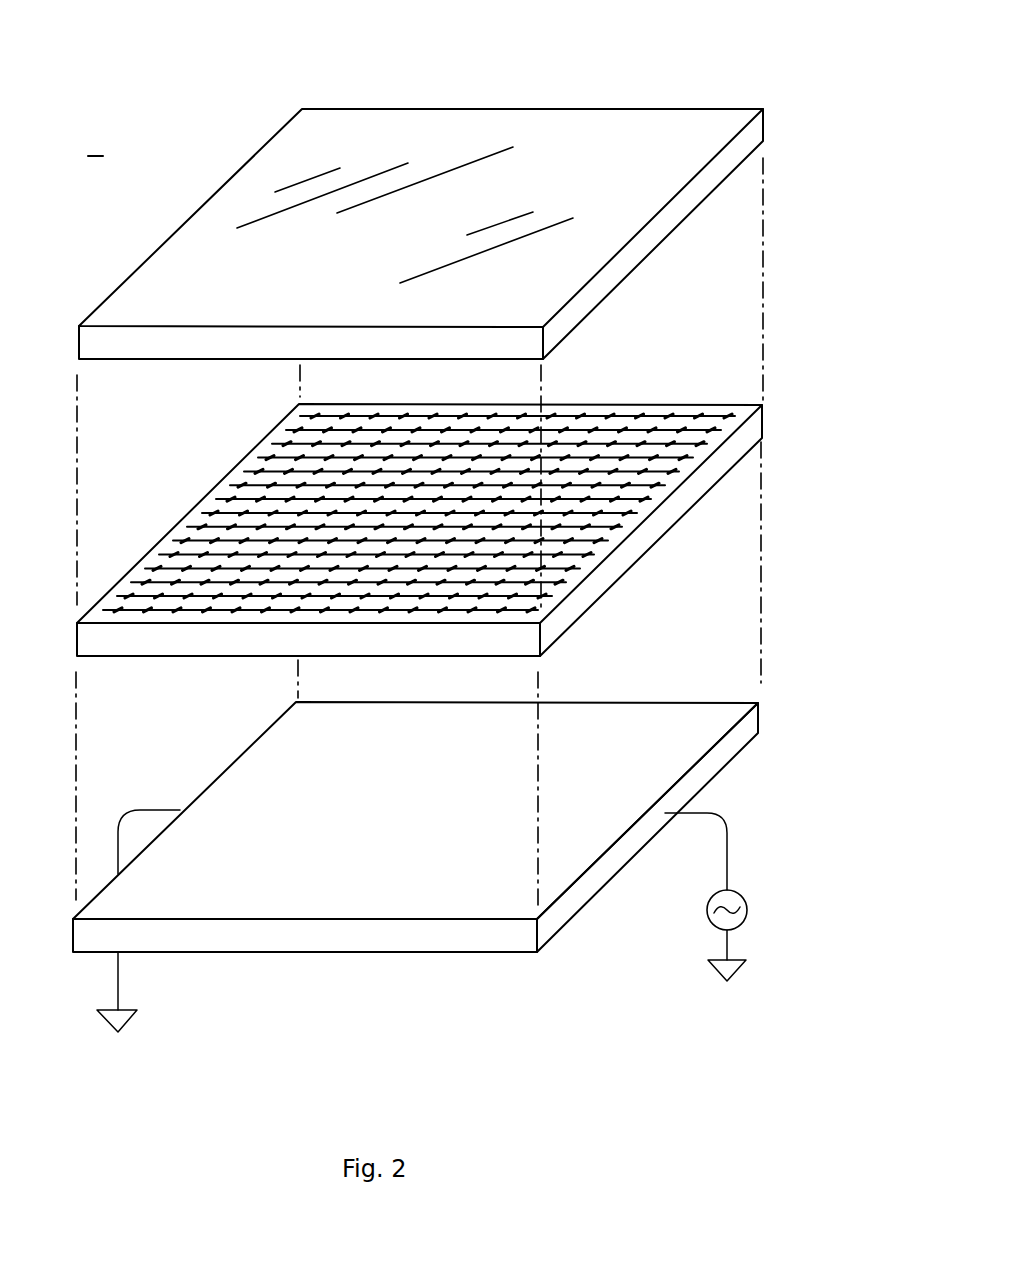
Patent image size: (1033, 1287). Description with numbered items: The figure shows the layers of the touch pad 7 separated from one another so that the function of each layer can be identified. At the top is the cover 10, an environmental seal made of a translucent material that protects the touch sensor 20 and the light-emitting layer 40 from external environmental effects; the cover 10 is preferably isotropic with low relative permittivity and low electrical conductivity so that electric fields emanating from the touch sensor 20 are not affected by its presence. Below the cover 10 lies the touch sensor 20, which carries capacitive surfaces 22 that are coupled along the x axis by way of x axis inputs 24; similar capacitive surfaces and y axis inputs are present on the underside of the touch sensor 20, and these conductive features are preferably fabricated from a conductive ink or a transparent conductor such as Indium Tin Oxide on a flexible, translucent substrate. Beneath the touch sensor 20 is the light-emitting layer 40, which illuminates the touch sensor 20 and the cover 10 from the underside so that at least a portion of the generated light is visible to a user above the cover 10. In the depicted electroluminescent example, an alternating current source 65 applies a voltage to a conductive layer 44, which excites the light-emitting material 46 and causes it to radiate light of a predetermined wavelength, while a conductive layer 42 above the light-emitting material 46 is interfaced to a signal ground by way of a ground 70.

The touch pad 7 is at (95, 144).
The cover 10 is at (632, 90).
The touch sensor 20 is at (475, 513).
The capacitive surfaces 22 is at (270, 486).
The x axis inputs 24 is at (221, 498).
The light-emitting layer 40 is at (473, 829).
The conductive layer 42 is at (623, 724).
The conductive layer 44 is at (740, 756).
The light-emitting material 46 is at (295, 940).
The alternating current source 65 is at (737, 958).
The ground 70 is at (110, 1008).